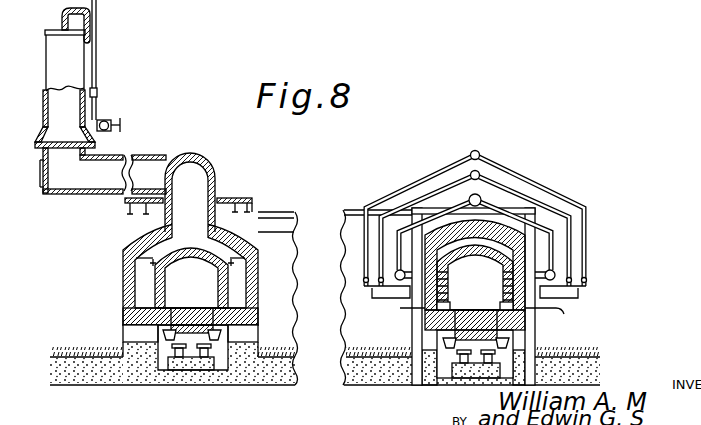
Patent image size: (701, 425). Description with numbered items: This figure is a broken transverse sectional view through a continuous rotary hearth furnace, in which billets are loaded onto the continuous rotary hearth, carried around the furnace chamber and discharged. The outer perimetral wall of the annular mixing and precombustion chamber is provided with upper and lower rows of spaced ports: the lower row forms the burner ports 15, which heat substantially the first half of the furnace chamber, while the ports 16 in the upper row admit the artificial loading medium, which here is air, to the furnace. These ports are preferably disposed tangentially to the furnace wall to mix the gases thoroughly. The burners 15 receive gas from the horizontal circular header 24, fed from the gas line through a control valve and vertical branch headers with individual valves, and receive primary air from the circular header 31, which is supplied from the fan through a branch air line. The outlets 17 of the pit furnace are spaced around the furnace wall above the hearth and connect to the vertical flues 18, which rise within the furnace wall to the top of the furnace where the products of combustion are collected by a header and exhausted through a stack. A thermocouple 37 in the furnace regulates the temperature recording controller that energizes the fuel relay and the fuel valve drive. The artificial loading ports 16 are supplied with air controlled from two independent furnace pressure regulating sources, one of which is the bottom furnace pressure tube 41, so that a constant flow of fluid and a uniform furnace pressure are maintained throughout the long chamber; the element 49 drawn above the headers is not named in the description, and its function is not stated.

The burner ports 15 is at (506, 297).
The artificial loading ports 16 is at (506, 276).
The outlets 17 is at (215, 303).
The vertical flues 18 is at (190, 196).
The horizontal circular header 24 is at (479, 153).
The circular header 31 is at (480, 172).
The thermocouple 37 is at (440, 250).
The bottom furnace pressure tube 41 is at (494, 315).
The inner pivoted frame with rollers 49 is at (482, 197).